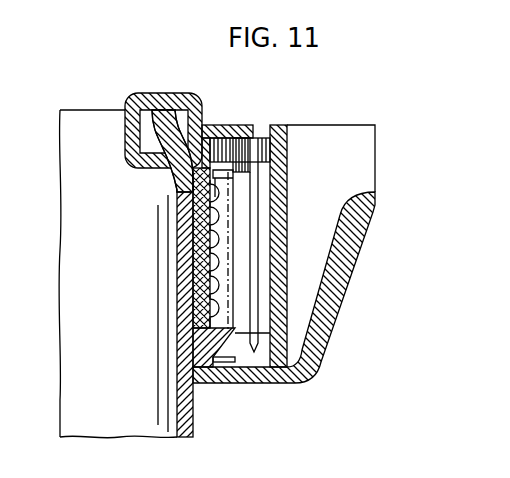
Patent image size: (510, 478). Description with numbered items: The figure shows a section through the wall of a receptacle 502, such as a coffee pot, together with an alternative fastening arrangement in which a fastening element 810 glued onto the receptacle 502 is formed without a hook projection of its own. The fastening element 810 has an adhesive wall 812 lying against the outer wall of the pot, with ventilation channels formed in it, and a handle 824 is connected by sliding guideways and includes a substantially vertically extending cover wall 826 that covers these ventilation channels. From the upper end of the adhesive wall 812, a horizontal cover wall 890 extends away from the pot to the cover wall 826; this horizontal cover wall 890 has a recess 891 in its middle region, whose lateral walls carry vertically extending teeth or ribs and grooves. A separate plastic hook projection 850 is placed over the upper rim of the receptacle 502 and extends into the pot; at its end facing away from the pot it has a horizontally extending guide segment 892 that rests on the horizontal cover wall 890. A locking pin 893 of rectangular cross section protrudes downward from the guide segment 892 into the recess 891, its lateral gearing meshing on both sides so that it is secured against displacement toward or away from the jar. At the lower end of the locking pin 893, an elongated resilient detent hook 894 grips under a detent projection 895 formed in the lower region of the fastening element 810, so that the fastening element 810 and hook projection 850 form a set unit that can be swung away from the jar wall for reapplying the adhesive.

The receptacle 502 is at (199, 429).
The hook projection 850 is at (164, 88).
The locking pin 893 is at (177, 188).
The adhesive wall 812 is at (200, 246).
The guide segment 892 is at (232, 125).
The recess 891 is at (272, 150).
The horizontal cover wall 890 is at (264, 137).
The resilient detent hook 894 is at (252, 259).
The cover wall 826 is at (279, 201).
The handle 824 is at (342, 302).
The fastening element 810 is at (208, 391).
The detent projection 895 is at (270, 334).